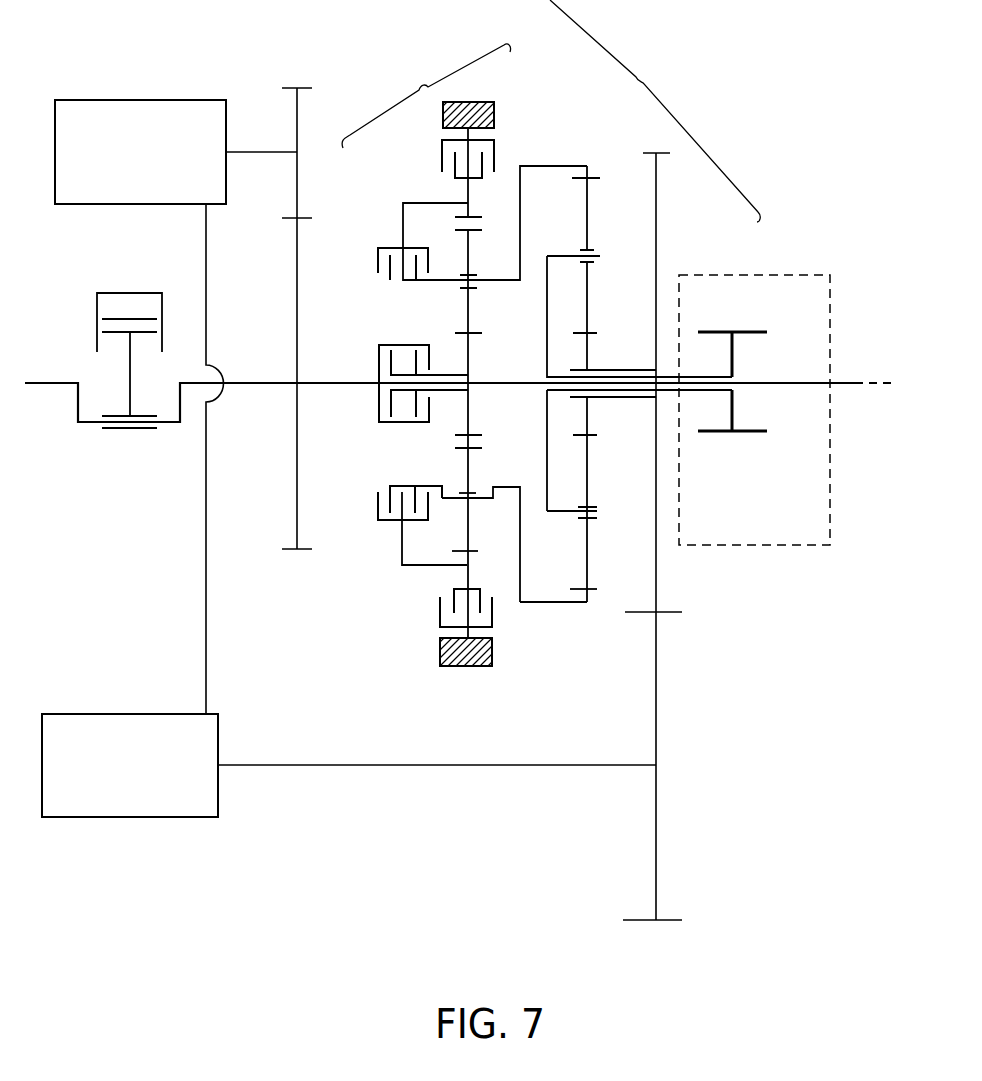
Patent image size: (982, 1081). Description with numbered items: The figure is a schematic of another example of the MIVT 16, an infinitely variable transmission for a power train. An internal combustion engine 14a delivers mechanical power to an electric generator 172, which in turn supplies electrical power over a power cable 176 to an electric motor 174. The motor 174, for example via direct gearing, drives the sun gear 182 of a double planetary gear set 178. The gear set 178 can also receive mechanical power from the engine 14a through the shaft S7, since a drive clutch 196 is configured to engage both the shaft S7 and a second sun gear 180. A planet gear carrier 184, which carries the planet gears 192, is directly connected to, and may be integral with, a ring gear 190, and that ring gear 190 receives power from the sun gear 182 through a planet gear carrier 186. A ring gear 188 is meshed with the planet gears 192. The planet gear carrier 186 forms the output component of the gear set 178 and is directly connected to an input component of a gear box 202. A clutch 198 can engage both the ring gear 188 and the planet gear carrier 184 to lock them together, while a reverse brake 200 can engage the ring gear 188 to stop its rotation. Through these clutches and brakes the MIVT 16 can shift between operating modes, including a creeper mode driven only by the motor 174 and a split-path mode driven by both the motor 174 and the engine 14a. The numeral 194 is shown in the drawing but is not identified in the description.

The internal combustion engine 14a is at (123, 292).
The MIVT 16 is at (645, 72).
The electric generator 172 is at (178, 100).
The electric motor 174 is at (163, 712).
The power cable 176 is at (206, 618).
The double planetary gear set 178 is at (415, 68).
The sun gear 180 is at (440, 504).
The sun gear 182 is at (639, 383).
The planet gear carrier 184 is at (487, 492).
The planet gear carrier 186 is at (595, 510).
The ring gear 188 is at (458, 577).
The ring gear 190 is at (558, 610).
The planet gears 192 is at (482, 323).
The shaft 194 is at (602, 384).
The drive clutch 196 is at (417, 372).
The clutch 198 is at (405, 525).
The reverse brake 200 is at (492, 610).
The gear box 202 is at (780, 275).
The shaft S7 is at (872, 406).